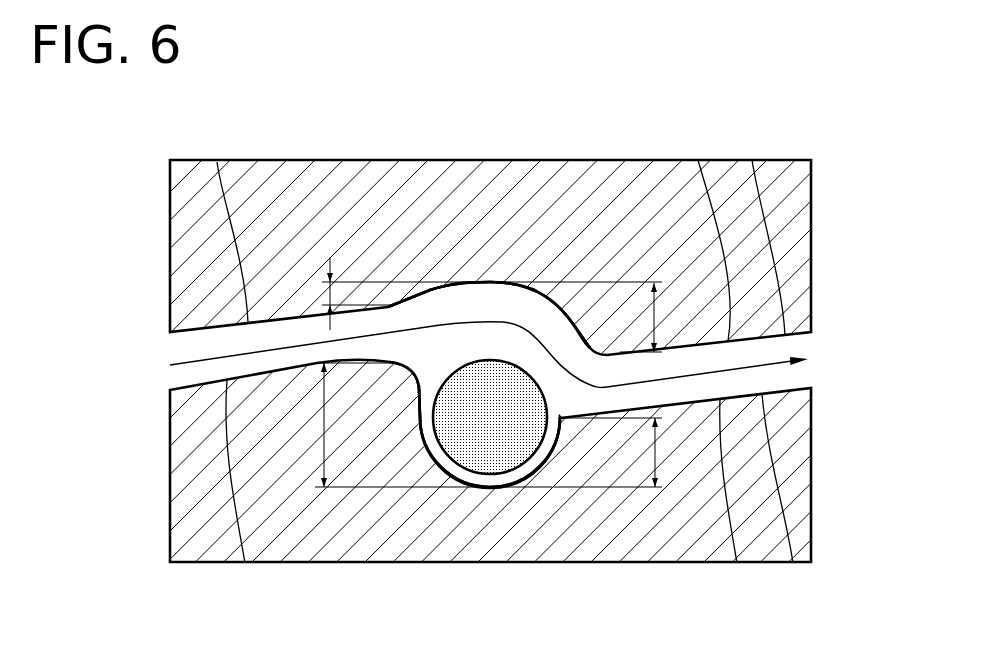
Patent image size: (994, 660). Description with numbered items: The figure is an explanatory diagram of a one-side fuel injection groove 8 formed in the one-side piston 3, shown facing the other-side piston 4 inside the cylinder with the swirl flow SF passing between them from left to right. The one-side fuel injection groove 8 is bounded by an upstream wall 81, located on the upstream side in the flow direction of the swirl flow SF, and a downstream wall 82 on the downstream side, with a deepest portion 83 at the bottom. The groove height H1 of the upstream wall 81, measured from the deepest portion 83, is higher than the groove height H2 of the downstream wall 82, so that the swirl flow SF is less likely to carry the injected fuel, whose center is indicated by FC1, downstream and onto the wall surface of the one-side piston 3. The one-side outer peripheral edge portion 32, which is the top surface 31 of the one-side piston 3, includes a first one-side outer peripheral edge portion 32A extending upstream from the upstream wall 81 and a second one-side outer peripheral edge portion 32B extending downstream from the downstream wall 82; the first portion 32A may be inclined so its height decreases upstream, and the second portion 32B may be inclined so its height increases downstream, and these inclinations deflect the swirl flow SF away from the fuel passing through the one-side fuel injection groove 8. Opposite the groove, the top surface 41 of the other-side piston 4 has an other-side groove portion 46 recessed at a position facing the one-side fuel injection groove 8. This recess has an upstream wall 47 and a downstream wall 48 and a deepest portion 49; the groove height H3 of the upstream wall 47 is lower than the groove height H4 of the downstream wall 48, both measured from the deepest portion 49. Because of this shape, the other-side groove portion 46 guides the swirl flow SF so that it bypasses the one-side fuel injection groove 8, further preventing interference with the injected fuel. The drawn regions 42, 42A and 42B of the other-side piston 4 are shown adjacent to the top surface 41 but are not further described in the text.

The one-side piston 3 is at (322, 563).
The other-side piston 4 is at (302, 160).
The one-side fuel injection groove 8 is at (413, 377).
The top surface 31 is at (800, 511).
The one-side outer peripheral edge portion 32 is at (793, 563).
The first one-side outer peripheral edge portion 32A is at (245, 563).
The second one-side outer peripheral edge portion 32B is at (737, 563).
The top surface 41 is at (772, 215).
The upper substrate layer 42 is at (752, 160).
The downstream region of upper substrate 42A is at (698, 160).
The upstream region of upper substrate 42B is at (217, 162).
The other-side groove portion 46 is at (537, 292).
The upstream wall 47 is at (415, 297).
The downstream wall 48 is at (565, 317).
The deepest portion 49 is at (490, 282).
The upstream wall 81 is at (418, 400).
The downstream wall 82 is at (558, 430).
The deepest portion 83 is at (490, 487).
The center of the fuel FC1 is at (490, 417).
The swirl flow SF is at (187, 363).
The groove height H1 is at (473, 425).
The groove height H2 is at (627, 452).
The groove height H3 is at (473, 293).
The groove height H4 is at (636, 317).